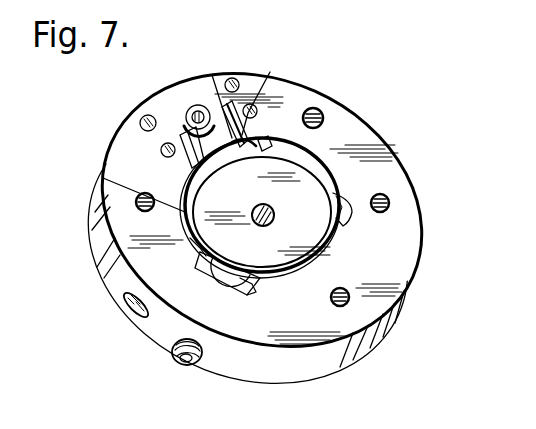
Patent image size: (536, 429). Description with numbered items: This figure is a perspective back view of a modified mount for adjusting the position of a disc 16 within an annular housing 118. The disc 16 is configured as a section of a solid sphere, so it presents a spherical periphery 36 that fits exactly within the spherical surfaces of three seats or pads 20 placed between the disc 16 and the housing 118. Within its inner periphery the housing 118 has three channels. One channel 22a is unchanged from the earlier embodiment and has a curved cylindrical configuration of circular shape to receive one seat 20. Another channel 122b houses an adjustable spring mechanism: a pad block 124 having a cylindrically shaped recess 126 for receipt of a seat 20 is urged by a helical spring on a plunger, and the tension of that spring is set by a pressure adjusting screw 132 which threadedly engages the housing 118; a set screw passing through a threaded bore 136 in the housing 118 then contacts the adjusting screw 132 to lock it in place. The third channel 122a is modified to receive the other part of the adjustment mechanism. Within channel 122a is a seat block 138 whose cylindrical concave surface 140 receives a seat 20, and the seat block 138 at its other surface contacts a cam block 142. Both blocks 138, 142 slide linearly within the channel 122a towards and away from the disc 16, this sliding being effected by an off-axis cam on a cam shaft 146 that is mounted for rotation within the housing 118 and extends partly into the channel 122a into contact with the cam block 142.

The disc 16 is at (299, 182).
The seats or pads 20 is at (300, 181).
The channel 22a is at (343, 222).
The spherical periphery 36 is at (103, 178).
The housing 118 is at (357, 128).
The channel 122a is at (185, 137).
The channel 122b is at (243, 293).
The pad block 124 is at (252, 283).
The cylindrically shaped recess 126 is at (200, 245).
The pressure adjusting screw 132 is at (183, 363).
The threaded bore 136 is at (123, 302).
The seat block 138 is at (249, 104).
The cylindrical concave surface 140 is at (267, 92).
The cam block 142 is at (222, 108).
The cam shaft 146 is at (195, 108).